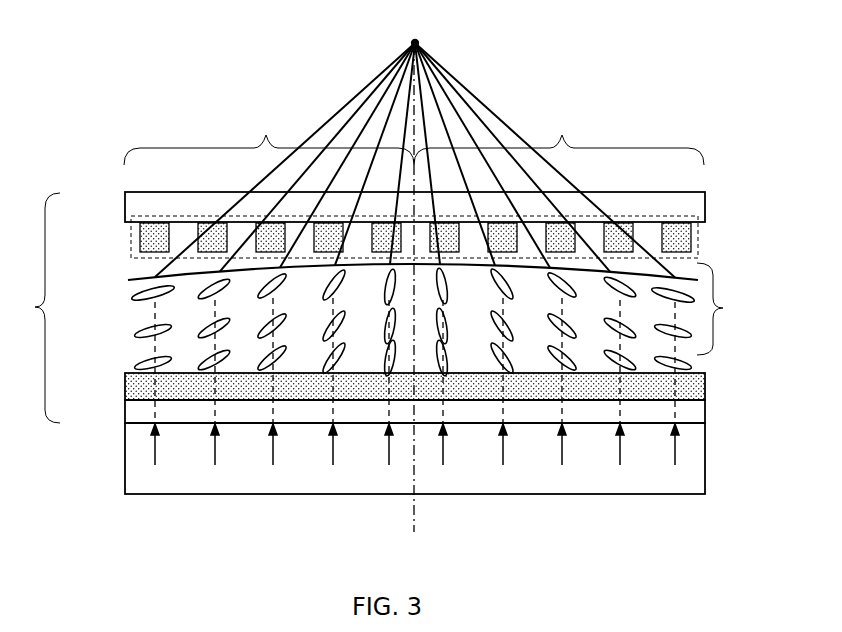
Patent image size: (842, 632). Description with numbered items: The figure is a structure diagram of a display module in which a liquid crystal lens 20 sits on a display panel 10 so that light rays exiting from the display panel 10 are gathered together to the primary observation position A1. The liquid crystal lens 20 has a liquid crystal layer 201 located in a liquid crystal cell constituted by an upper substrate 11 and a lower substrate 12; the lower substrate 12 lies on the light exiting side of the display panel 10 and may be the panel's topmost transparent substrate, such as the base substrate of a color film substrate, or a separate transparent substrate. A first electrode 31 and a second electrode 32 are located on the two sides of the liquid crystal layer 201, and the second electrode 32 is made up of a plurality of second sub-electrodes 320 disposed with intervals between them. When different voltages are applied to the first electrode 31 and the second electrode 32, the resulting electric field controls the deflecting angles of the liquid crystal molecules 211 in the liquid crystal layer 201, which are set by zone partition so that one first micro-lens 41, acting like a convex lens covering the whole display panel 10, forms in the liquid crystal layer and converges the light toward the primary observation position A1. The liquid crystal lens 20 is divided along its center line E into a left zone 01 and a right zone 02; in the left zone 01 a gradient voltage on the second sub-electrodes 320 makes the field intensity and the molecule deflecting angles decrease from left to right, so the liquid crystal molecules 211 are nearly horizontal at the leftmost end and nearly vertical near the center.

The display panel 10 is at (690, 463).
The upper substrate 11 is at (690, 205).
The lower substrate 12 is at (690, 412).
The liquid crystal lens 20 is at (390, 307).
The liquid crystal layer 201 is at (419, 343).
The liquid crystal molecules 211 is at (135, 332).
The first electrode 31 is at (700, 383).
The second electrode 32 is at (698, 238).
The second sub-electrodes 320 is at (140, 232).
The first micro-lens 41 is at (133, 297).
The left zone 01 is at (269, 132).
The right zone 02 is at (559, 132).
The primary observation position A1 is at (415, 143).
The line E-E' E is at (422, 304).